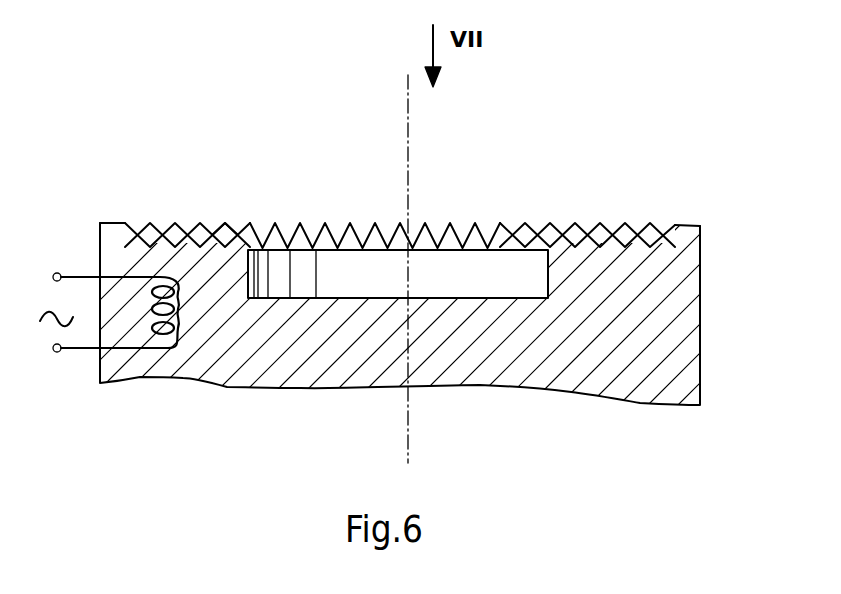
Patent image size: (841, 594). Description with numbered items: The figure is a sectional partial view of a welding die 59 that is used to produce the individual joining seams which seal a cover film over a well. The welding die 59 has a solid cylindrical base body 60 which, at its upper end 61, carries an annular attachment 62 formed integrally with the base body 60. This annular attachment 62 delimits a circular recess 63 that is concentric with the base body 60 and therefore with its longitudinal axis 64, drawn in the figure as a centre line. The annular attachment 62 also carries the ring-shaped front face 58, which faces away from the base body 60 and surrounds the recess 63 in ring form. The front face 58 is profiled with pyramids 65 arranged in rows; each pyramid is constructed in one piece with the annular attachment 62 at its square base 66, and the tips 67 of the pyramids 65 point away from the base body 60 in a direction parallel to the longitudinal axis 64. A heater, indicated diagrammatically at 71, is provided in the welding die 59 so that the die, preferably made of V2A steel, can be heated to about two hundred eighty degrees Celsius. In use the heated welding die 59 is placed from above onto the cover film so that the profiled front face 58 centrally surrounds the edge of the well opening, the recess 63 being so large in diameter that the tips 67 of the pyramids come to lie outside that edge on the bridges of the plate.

The front face 58 is at (178, 214).
The welding die 59 is at (716, 234).
The base body 60 is at (672, 355).
The upper end 61 is at (673, 257).
The annular attachment 62 is at (110, 223).
The circular recess 63 is at (342, 268).
The longitudinal axis 64 is at (408, 212).
The pyramids 65 is at (523, 237).
The square base 66 is at (273, 253).
The tips 67 is at (223, 225).
The heater 71 is at (64, 250).